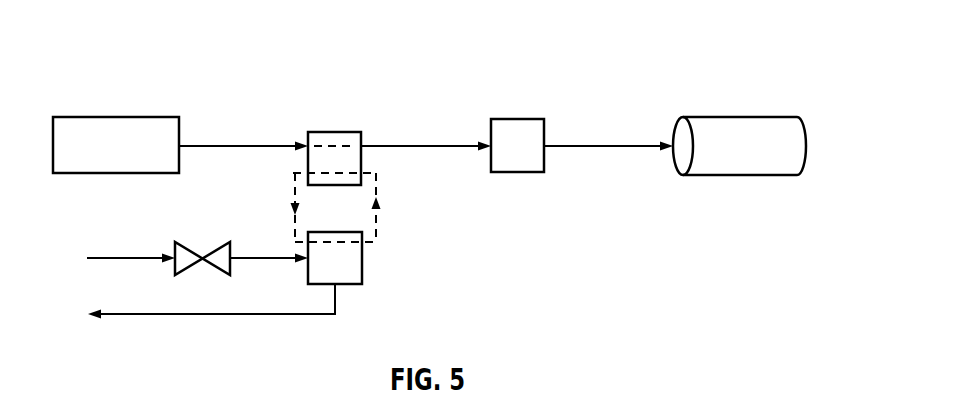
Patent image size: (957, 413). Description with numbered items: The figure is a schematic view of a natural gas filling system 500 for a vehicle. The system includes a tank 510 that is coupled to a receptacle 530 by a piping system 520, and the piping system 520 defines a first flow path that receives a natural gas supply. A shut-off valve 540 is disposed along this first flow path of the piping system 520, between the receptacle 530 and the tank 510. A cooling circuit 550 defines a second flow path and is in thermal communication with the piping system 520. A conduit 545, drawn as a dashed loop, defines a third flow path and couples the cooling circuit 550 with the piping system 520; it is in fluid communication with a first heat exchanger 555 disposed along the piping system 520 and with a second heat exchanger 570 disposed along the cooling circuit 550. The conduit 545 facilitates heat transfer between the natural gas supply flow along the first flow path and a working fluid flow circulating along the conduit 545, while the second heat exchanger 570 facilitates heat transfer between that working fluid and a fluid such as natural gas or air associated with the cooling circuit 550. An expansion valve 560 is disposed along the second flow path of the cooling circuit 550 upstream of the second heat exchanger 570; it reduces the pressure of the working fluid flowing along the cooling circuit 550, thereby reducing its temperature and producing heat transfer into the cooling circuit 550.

The natural gas filling system 500 is at (781, 60).
The tank 510 is at (764, 160).
The piping system 520 is at (427, 146).
The receptacle 530 is at (137, 158).
The shut-off valve 540 is at (517, 119).
The conduit 545 is at (378, 188).
The cooling circuit 550 is at (335, 298).
The first heat exchanger 555 is at (336, 132).
The expansion valve 560 is at (215, 245).
The second heat exchanger 570 is at (363, 258).